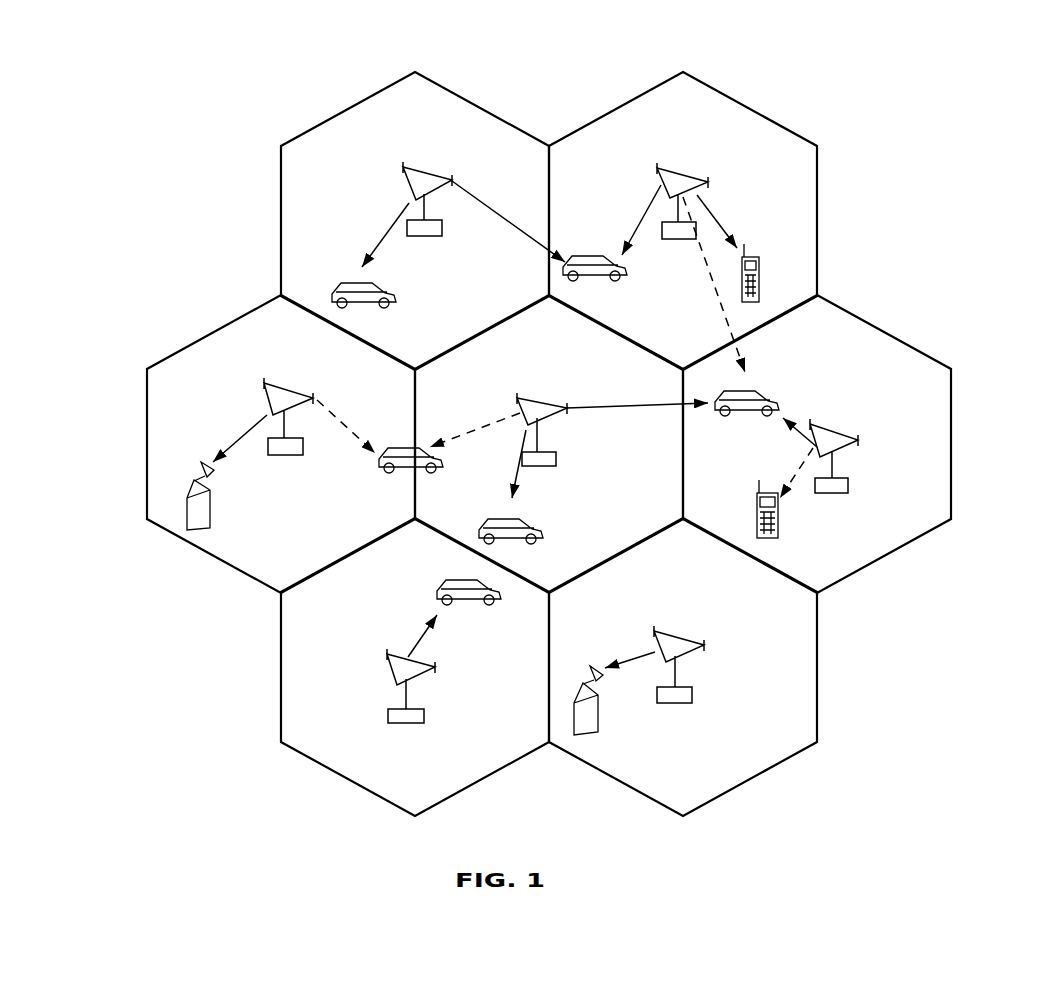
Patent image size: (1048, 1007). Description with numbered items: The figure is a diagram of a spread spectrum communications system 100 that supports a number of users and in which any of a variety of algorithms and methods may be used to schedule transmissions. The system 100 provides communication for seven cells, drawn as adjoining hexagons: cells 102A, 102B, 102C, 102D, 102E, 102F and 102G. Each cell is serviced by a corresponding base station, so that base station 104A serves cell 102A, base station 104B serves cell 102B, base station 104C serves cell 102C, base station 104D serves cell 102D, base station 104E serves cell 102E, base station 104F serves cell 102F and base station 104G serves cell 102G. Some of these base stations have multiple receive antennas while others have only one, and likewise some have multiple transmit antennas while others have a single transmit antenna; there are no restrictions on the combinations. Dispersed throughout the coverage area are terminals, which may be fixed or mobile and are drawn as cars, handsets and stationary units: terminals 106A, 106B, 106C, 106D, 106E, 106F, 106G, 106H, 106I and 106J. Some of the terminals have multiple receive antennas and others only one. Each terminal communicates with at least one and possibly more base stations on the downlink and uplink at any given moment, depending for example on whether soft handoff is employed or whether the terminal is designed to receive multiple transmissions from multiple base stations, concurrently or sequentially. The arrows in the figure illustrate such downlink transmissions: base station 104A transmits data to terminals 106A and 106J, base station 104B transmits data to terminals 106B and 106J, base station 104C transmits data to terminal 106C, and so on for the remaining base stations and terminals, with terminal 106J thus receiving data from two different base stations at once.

The communications system 100 is at (869, 63).
The cell 102A is at (357, 103).
The cell 102B is at (740, 106).
The cell 102C is at (211, 334).
The cell 102D is at (583, 338).
The cell 102E is at (951, 447).
The cell 102F is at (279, 673).
The cell 102G is at (817, 652).
The base station 104A is at (408, 172).
The base station 104B is at (673, 176).
The base station 104C is at (280, 392).
The base station 104D is at (532, 408).
The base station 104E is at (822, 433).
The base station 104F is at (388, 663).
The base station 104G is at (661, 644).
The terminal 106A is at (359, 283).
The terminal 106B is at (746, 254).
The terminal 106C is at (205, 467).
The terminal 106D is at (508, 520).
The terminal 106E is at (753, 390).
The terminal 106F is at (465, 580).
The terminal 106G is at (592, 668).
The terminal 106H is at (403, 448).
The terminal 106I is at (759, 497).
The terminal 106J is at (603, 257).